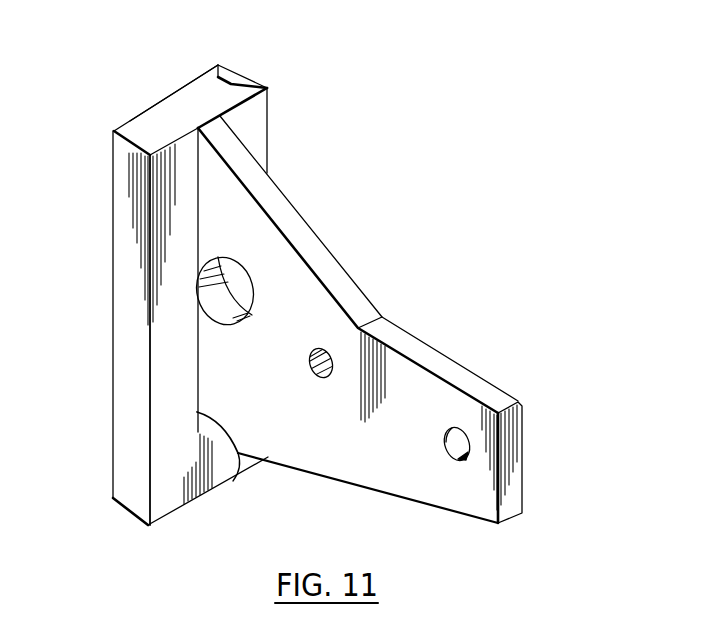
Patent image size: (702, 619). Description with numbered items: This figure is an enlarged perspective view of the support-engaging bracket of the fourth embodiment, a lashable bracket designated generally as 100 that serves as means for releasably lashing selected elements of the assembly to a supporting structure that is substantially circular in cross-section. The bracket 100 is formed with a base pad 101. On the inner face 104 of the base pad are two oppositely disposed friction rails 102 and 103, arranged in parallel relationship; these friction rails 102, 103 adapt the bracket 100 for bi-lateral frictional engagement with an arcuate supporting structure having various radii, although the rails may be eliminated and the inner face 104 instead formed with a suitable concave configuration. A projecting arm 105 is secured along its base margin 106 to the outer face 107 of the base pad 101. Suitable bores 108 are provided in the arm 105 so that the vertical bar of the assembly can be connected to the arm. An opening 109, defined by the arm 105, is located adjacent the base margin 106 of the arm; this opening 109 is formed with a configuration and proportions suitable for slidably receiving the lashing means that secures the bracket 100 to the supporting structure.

The lashable bracket 100 is at (440, 353).
The base pad 101 is at (268, 128).
The friction rail 102 is at (219, 64).
The friction rail 103 is at (114, 130).
The inner face 104 is at (180, 108).
The projecting arm 105 is at (362, 287).
The base margin 106 is at (242, 456).
The outer face 107 is at (177, 510).
The bore 108 is at (470, 448).
The opening 109 is at (243, 277).